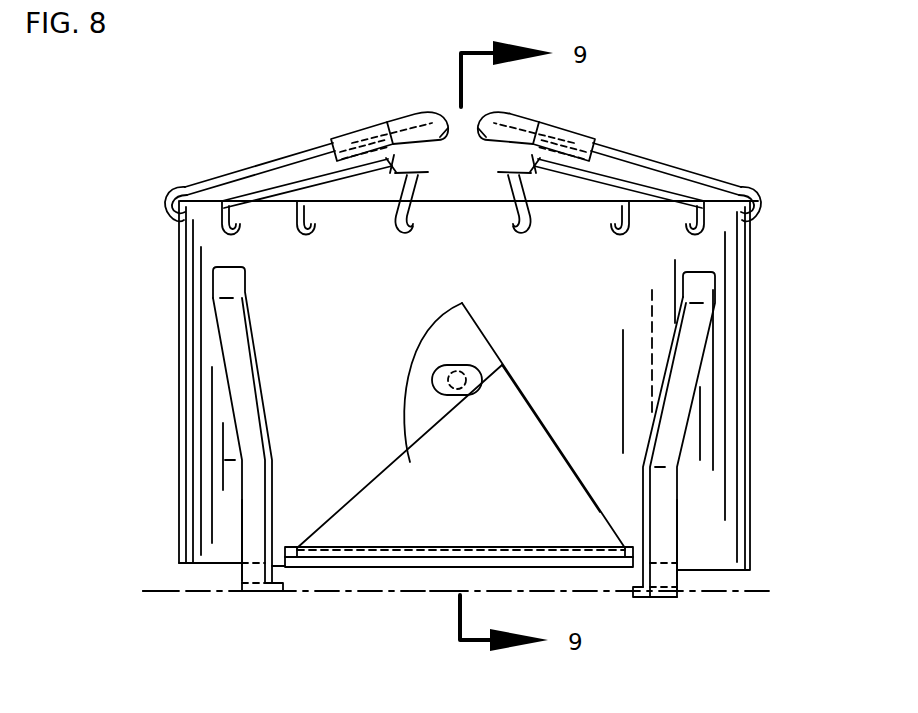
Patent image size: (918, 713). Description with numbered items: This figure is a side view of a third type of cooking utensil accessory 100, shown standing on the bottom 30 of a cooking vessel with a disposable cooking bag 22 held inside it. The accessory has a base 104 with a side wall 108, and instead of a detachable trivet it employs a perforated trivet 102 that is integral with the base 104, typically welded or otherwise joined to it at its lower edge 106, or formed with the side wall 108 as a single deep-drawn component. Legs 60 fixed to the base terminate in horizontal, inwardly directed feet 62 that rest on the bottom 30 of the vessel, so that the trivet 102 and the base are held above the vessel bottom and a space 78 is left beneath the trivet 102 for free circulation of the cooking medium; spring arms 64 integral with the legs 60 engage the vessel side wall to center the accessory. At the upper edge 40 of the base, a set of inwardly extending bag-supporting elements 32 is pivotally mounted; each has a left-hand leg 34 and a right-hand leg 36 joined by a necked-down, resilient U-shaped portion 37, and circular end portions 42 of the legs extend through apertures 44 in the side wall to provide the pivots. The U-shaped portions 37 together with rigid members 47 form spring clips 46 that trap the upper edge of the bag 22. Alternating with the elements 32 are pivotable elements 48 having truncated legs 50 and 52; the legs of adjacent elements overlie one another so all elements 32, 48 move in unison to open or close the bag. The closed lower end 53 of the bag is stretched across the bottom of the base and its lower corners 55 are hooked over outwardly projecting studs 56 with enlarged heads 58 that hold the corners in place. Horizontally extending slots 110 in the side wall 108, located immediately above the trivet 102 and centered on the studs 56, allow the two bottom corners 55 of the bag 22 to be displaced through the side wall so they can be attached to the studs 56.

The disposable bag 22 is at (405, 432).
The bottom of the utensil 30 is at (165, 590).
The bag-supporting elements 32 is at (288, 156).
The left-hand leg 34 is at (680, 172).
The right-hand leg 36 is at (242, 176).
The U-shaped portion 37 is at (355, 137).
The upper edge 40 is at (450, 192).
The circular end portions 42 is at (166, 210).
The apertures 44 is at (322, 240).
The spring clips 46 is at (440, 118).
The rigid members 47 is at (397, 120).
The pivotable elements 48 is at (547, 173).
The truncated leg 50 is at (385, 211).
The truncated leg 52 is at (583, 206).
The lower end of the bag 53 is at (585, 556).
The lower corners of the bag 55 is at (529, 294).
The studs 56 is at (436, 366).
The enlarged heads 58 is at (430, 390).
The legs 60 is at (282, 510).
The feet 62 is at (277, 593).
The spring arms 64 is at (225, 332).
The space 78 is at (447, 580).
The cooking utensil accessory 100 is at (170, 412).
The trivet 102 is at (510, 562).
The base 104 is at (762, 496).
The lower edge 106 is at (193, 567).
The side wall 108 is at (485, 365).
The slots 110 is at (370, 567).